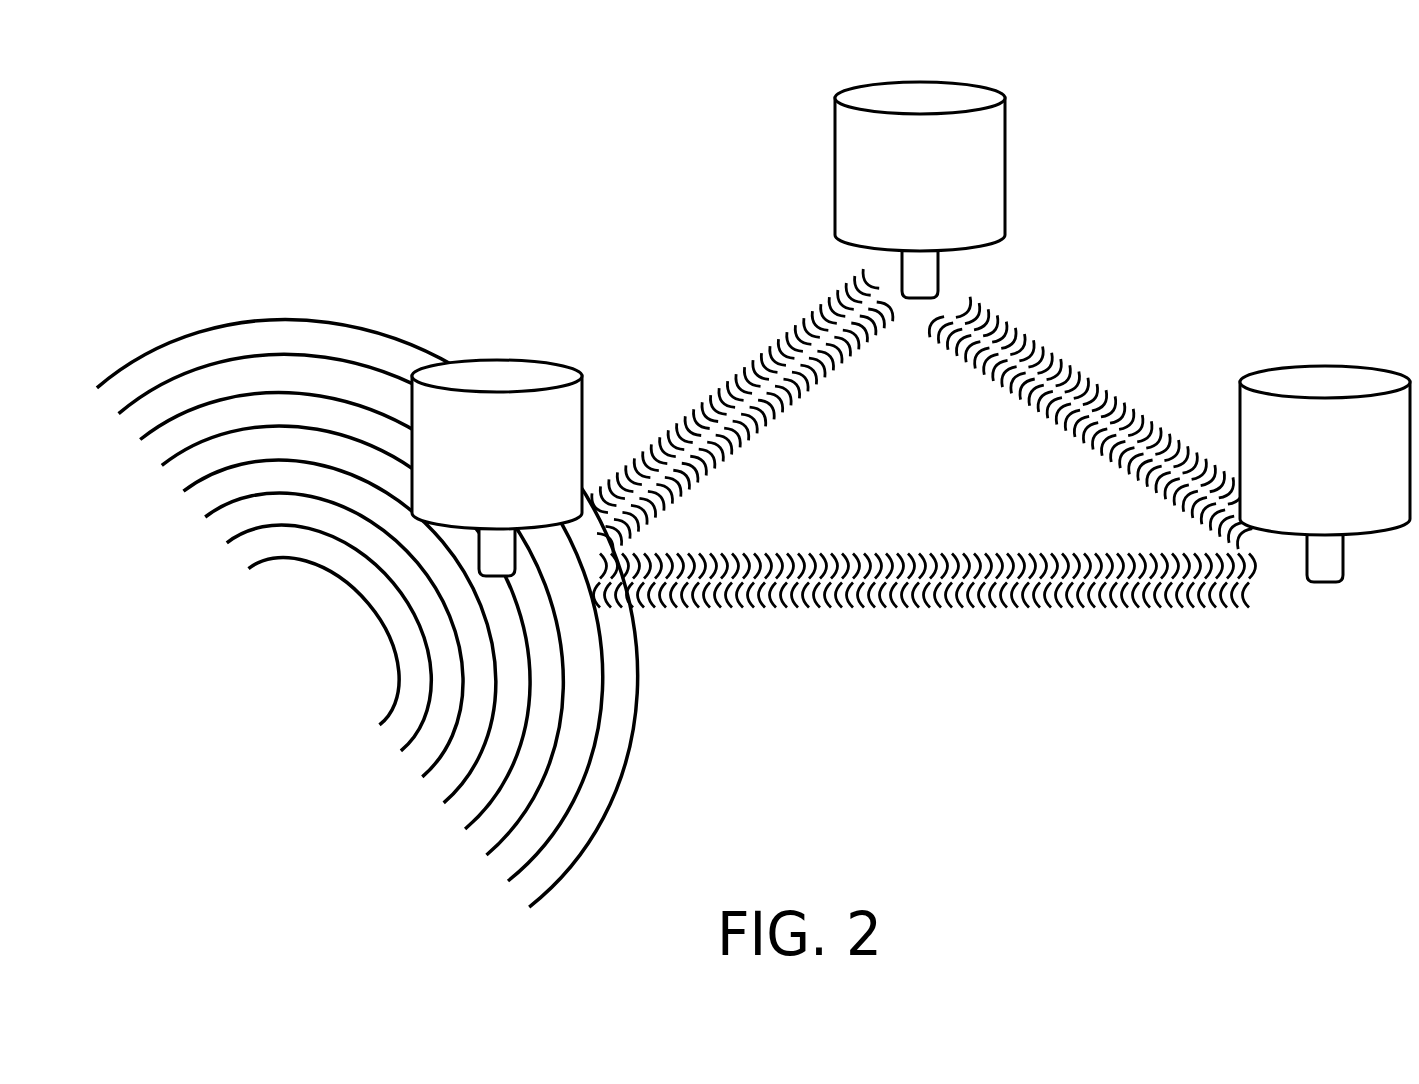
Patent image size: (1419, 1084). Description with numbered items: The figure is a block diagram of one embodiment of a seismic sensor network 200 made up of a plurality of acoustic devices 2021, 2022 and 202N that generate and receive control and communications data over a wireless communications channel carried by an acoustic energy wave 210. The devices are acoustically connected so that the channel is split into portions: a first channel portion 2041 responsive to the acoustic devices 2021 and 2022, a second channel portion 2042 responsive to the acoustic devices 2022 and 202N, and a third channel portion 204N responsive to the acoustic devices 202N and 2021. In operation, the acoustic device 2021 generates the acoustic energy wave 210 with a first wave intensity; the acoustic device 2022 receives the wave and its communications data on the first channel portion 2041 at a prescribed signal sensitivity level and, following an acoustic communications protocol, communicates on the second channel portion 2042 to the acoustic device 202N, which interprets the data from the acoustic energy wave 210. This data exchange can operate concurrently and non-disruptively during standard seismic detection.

The seismic sensor network 200 is at (1112, 117).
The acoustic device 202N is at (935, 228).
The acoustic device 2021 is at (512, 505).
The acoustic device 2022 is at (1340, 511).
The third channel portion 204N is at (737, 405).
The first channel portion 2041 is at (925, 606).
The second channel portion 2042 is at (1089, 399).
The acoustic energy wave 210 is at (367, 614).